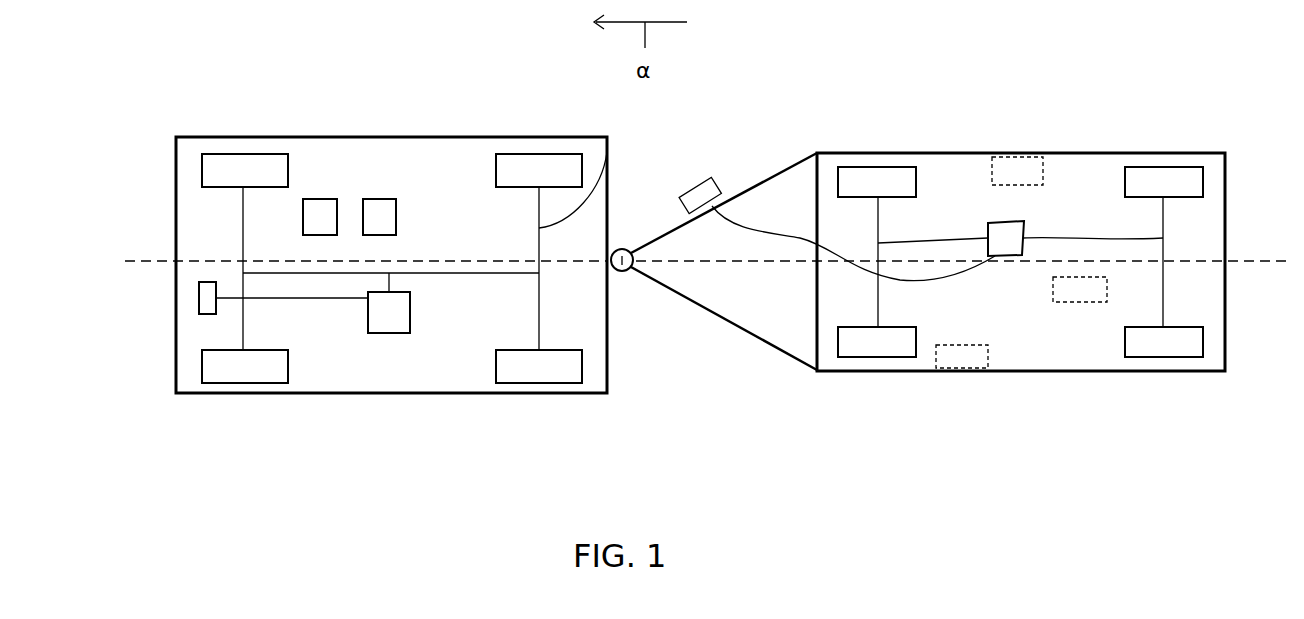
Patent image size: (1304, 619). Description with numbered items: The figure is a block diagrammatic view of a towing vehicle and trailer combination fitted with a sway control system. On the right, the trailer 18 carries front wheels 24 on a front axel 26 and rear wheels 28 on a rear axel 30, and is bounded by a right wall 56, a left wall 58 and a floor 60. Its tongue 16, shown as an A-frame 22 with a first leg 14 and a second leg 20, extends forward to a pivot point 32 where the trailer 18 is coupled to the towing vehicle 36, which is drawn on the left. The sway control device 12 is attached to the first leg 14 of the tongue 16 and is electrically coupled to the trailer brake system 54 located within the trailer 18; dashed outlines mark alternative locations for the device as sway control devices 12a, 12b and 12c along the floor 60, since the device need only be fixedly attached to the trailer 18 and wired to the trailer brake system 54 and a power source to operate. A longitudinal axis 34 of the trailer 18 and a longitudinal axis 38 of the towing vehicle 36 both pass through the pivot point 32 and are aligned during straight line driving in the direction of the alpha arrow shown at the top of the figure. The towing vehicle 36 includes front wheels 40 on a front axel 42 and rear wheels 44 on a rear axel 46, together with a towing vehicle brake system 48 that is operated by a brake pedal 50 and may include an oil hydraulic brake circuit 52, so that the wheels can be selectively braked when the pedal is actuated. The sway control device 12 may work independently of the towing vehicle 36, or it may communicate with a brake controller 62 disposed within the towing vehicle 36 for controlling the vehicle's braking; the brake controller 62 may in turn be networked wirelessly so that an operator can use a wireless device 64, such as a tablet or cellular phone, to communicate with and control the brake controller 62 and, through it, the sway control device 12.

The sway control device 12 is at (703, 180).
The sway control device 12a is at (1017, 171).
The sway control device 12b is at (962, 357).
The sway control device 12c is at (1080, 289).
The first leg 14 is at (762, 176).
The tongue 16 is at (655, 216).
The trailer 18 is at (1083, 152).
The second leg 20 is at (725, 322).
The A-frame 22 is at (686, 324).
The front wheels 24 is at (890, 167).
The front axel 26 is at (878, 235).
The rear wheels 28 is at (1180, 167).
The rear axel 30 is at (1163, 308).
The pivot point 32 is at (622, 268).
The longitudinal axis 34 is at (1245, 259).
The towing vehicle 36 is at (394, 110).
The longitudinal axis 38 is at (138, 260).
The front wheels 40 is at (243, 154).
The front axel 42 is at (243, 220).
The rear wheels 44 is at (533, 154).
The rear axel 46 is at (605, 142).
The towing vehicle brake system 48 is at (389, 303).
The brake pedal 50 is at (197, 306).
The oil hydraulic brake circuit 52 is at (437, 276).
The trailer brake system 54 is at (1020, 238).
The right wall 56 is at (985, 152).
The left wall 58 is at (1032, 372).
The floor 60 is at (1010, 318).
The brake controller 62 is at (320, 217).
The wireless device 64 is at (379, 217).